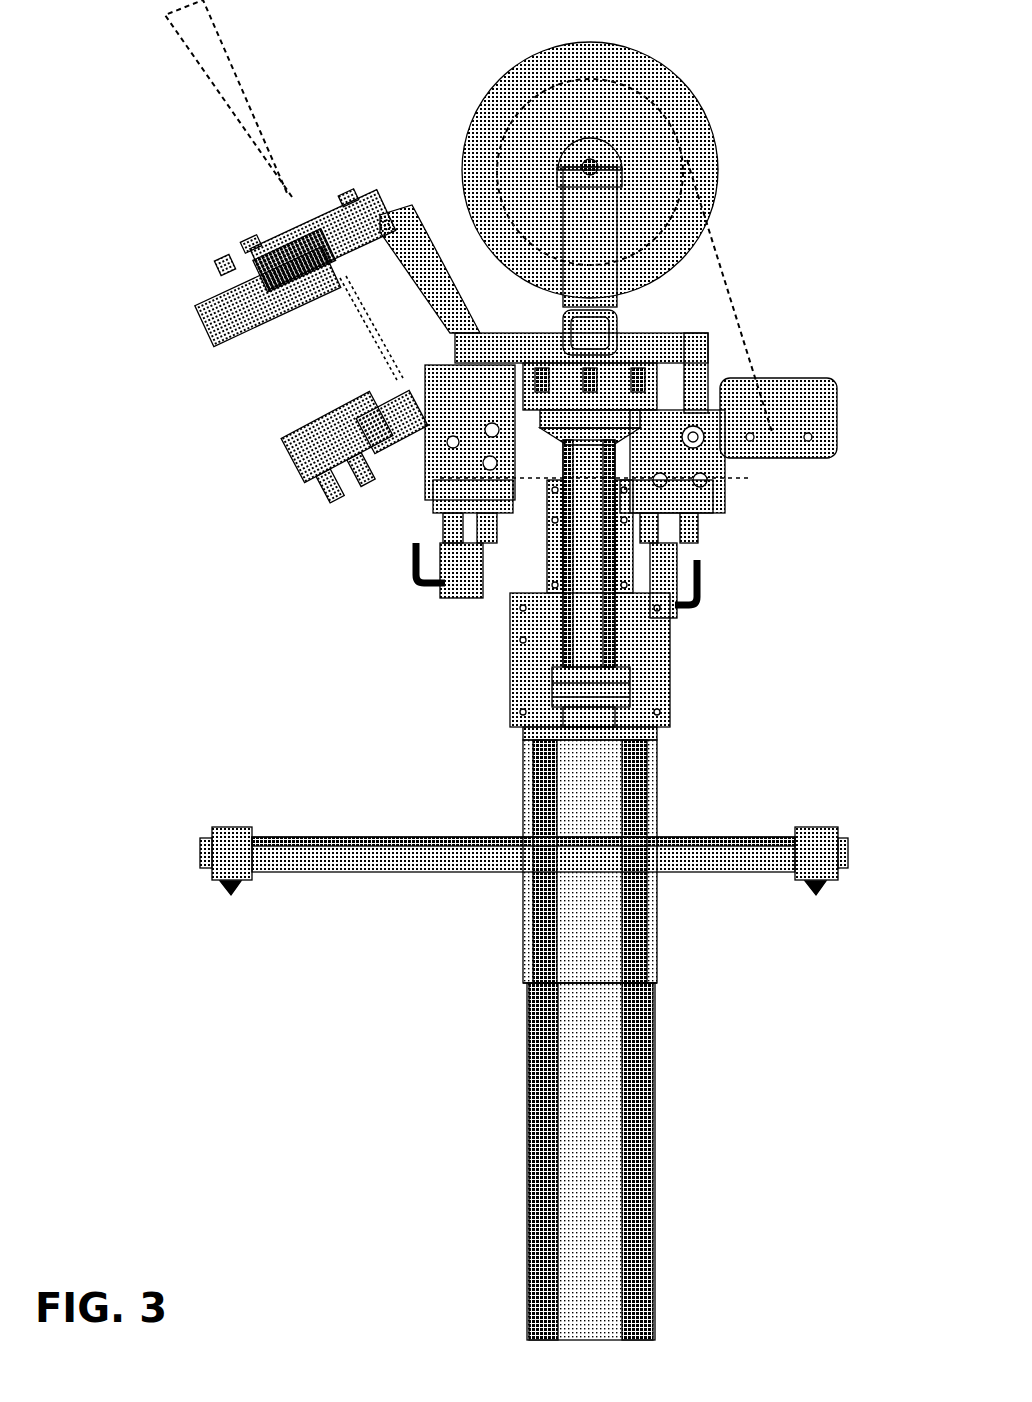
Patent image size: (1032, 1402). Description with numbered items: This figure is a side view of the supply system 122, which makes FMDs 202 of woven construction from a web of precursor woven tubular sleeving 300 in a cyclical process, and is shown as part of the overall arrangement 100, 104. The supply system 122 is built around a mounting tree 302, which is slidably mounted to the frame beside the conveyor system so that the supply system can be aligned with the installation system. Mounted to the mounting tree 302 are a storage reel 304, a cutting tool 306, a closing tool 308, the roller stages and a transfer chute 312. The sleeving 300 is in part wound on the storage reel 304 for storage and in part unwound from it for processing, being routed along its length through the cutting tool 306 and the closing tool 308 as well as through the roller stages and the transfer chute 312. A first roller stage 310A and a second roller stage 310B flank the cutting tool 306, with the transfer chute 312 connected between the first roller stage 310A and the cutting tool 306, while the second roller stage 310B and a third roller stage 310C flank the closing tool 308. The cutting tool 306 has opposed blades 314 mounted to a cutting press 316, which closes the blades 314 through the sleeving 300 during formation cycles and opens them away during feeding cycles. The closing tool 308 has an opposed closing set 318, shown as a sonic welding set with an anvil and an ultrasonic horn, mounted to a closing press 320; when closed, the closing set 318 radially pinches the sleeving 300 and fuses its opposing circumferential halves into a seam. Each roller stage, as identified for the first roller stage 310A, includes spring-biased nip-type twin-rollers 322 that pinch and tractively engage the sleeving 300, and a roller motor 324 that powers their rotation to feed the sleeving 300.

The automated system 100 is at (812, 94).
The tool changer assembly 104 is at (812, 124).
The supply system 122 is at (712, 342).
The FMD 202 is at (220, 98).
The sleeving 300 is at (712, 241).
The mounting tree 302 is at (648, 333).
The storage reel 304 is at (716, 208).
The cutting tool 306 is at (370, 413).
The closing tool 308 is at (613, 608).
The first roller stage 310A is at (375, 395).
The second roller stage 310B is at (437, 510).
The third roller stage 310C is at (715, 505).
The transfer chute 312 is at (423, 368).
The blades 314 is at (415, 400).
The cutting press 316 is at (358, 400).
The closing set 318 is at (600, 520).
The closing press 320 is at (627, 677).
The twin-rollers 322 is at (300, 203).
The roller motor 324 is at (367, 222).